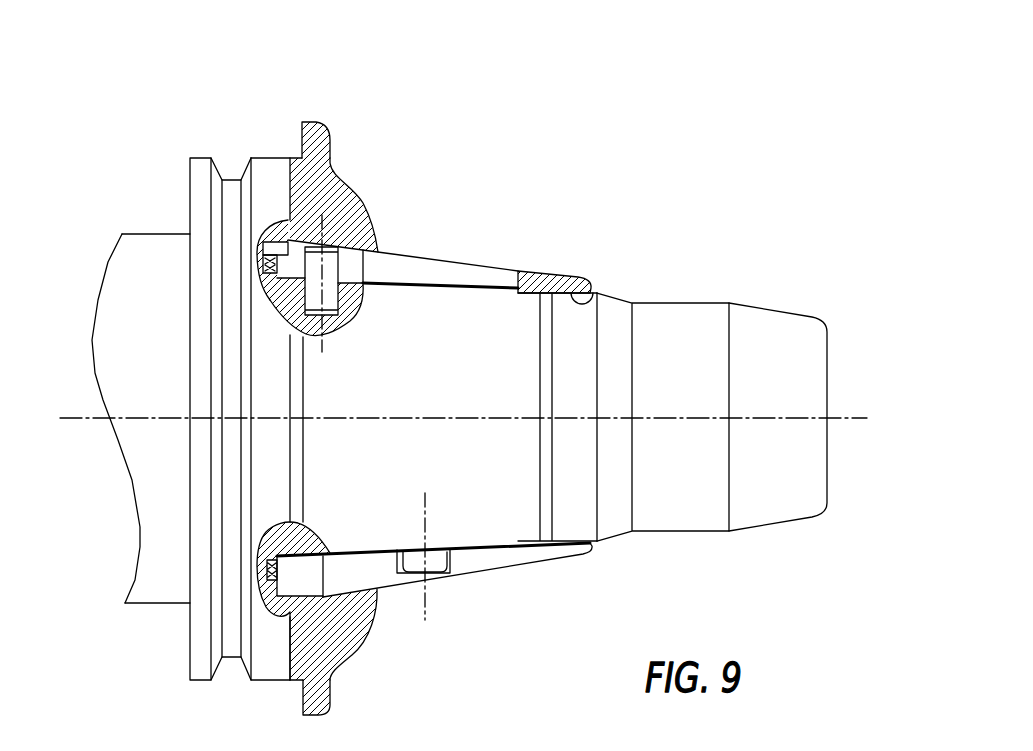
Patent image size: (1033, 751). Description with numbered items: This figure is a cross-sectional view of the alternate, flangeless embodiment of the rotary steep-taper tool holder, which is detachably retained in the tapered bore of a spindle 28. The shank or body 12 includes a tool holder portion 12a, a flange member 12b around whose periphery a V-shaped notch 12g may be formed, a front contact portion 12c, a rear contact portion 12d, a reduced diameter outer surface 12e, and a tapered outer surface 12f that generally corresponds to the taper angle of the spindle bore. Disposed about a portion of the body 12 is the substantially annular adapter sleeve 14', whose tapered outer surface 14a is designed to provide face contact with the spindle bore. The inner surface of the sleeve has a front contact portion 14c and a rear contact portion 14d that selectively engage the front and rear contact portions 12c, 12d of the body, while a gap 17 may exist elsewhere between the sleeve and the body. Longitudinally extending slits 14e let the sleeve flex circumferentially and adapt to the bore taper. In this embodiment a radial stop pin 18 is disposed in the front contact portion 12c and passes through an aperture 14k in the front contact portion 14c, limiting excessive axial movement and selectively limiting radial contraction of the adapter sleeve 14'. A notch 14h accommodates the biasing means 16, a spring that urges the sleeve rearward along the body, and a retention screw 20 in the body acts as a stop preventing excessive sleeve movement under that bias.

The shank or body 12 is at (725, 284).
The tool holder portion 12a is at (137, 233).
The flange member 12b is at (263, 157).
The front contact portion 12c is at (283, 248).
The rear contact portion 12d is at (560, 290).
The reduced diameter outer surface 12e is at (665, 303).
The tapered outer surface 12f is at (795, 310).
The V-shaped notch 12g is at (230, 179).
The adapter sleeve 14' is at (434, 375).
The tapered outer surface 14a is at (497, 265).
The front contact portion 14c is at (287, 318).
The rear contact portion 14d is at (593, 292).
The longitudinally extending slots or slits 14e is at (393, 257).
The notch 14h is at (260, 304).
The aperture or slot 14k is at (278, 157).
The biasing means 16 is at (258, 266).
The gap 17 is at (443, 287).
The radial stop pin 18 is at (330, 262).
The retention pin or screw 20 is at (440, 562).
The spindle 28 is at (323, 137).